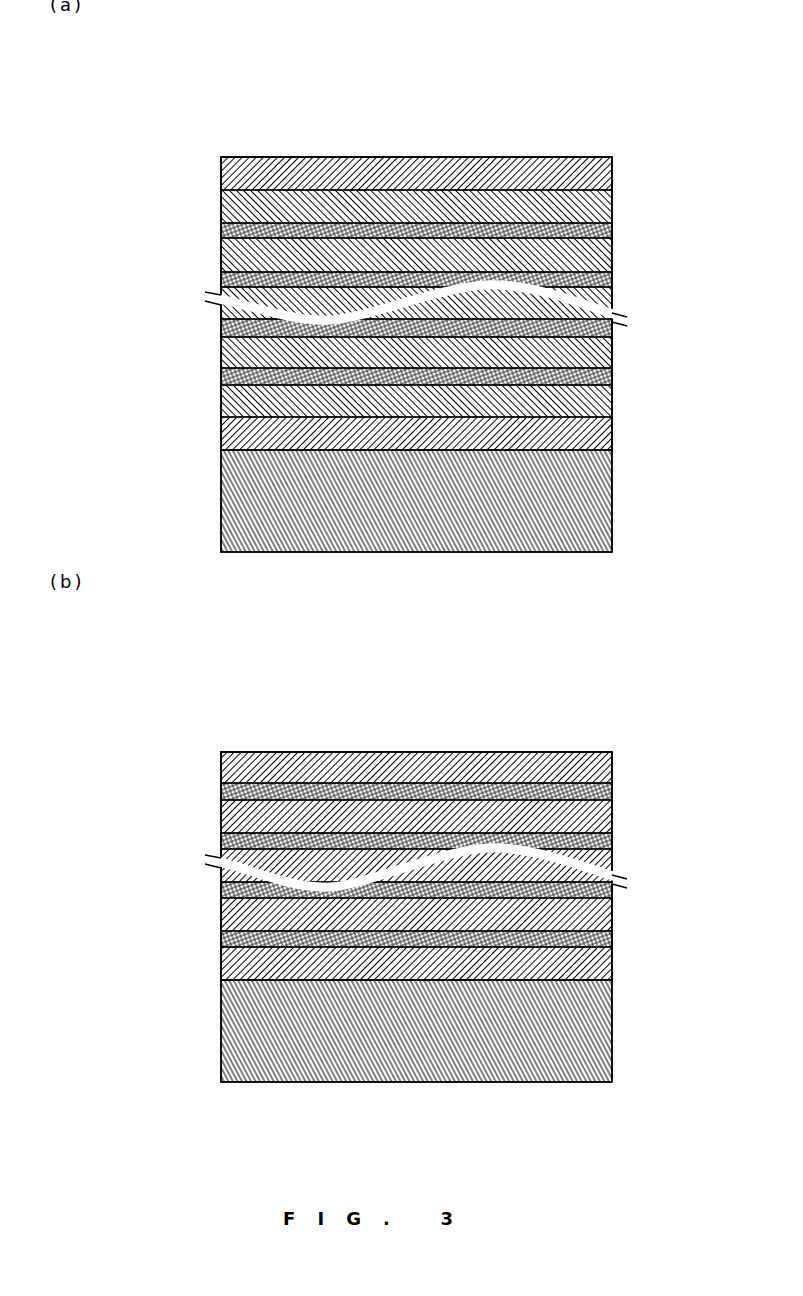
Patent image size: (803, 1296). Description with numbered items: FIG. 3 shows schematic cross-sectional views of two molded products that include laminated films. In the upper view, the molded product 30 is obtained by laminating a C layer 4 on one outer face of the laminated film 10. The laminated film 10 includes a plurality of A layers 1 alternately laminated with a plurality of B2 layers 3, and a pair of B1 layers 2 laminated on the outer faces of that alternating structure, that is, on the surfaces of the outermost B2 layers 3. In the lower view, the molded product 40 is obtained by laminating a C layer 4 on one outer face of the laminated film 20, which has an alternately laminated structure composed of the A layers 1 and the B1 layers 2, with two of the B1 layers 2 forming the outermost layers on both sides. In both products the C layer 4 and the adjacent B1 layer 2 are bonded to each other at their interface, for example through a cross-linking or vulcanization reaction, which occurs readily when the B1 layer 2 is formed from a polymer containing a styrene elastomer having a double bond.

The A layer 1 is at (612, 234).
The B1 layer 2 is at (612, 178).
The B2 layer 3 is at (612, 209).
The C layer 4 is at (612, 505).
The laminated film 10 is at (564, 150).
The laminated film 20 is at (564, 745).
The molded product 30 is at (206, 79).
The molded product 40 is at (206, 707).